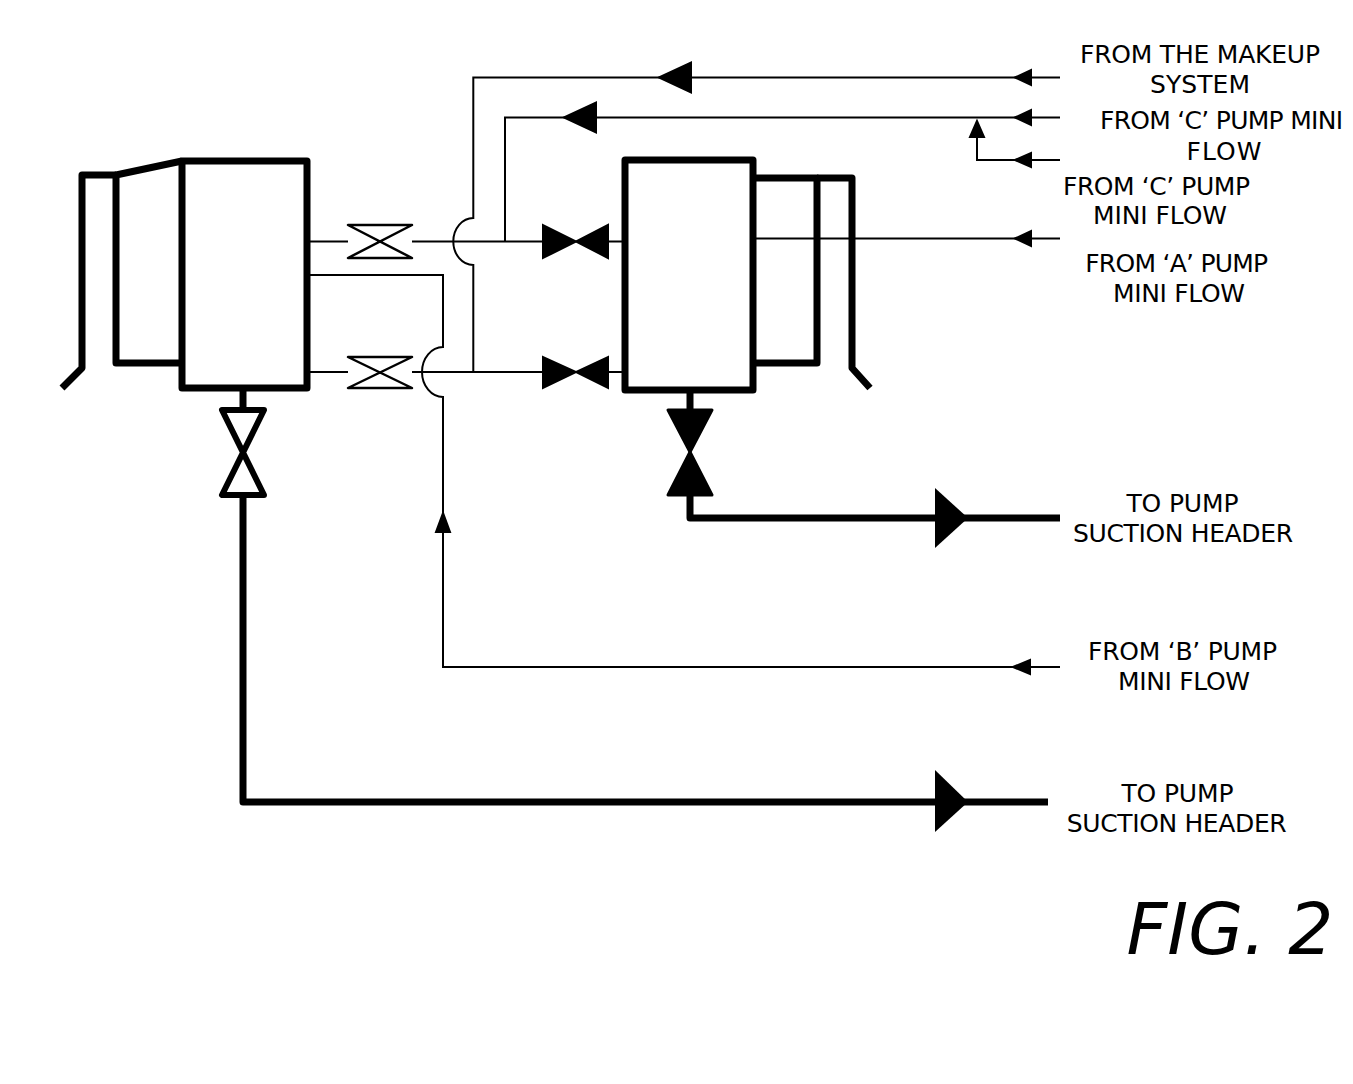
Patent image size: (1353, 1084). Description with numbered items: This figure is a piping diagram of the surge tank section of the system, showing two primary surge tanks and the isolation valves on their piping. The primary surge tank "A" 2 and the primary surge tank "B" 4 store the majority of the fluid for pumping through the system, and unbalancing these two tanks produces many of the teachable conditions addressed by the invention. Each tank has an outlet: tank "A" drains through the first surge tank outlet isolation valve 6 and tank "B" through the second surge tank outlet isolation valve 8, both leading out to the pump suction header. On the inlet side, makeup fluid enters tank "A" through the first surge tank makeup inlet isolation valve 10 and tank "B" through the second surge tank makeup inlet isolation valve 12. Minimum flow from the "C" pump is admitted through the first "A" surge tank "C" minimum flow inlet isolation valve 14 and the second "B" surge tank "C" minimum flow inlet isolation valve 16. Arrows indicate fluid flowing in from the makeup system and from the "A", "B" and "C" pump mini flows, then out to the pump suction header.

The primary surge tank "A" 2 is at (782, 412).
The primary surge tank "B" 4 is at (146, 407).
The first surge tank outlet isolation valve 6 is at (640, 486).
The second surge tank outlet isolation valve 8 is at (188, 490).
The first surge tank makeup inlet isolation valve 10 is at (558, 416).
The second surge tank makeup inlet isolation valve 12 is at (368, 422).
The first "A" surge tank "C" minimum flow inlet isolation valve 14 is at (568, 203).
The second "B" surge tank "C" minimum flow inlet isolation valve 16 is at (370, 203).